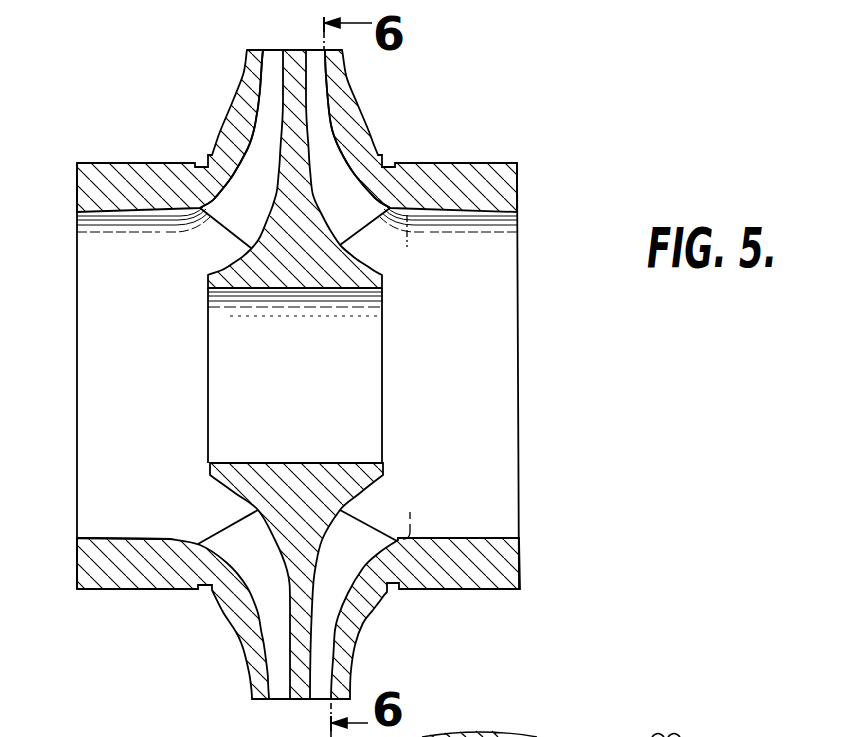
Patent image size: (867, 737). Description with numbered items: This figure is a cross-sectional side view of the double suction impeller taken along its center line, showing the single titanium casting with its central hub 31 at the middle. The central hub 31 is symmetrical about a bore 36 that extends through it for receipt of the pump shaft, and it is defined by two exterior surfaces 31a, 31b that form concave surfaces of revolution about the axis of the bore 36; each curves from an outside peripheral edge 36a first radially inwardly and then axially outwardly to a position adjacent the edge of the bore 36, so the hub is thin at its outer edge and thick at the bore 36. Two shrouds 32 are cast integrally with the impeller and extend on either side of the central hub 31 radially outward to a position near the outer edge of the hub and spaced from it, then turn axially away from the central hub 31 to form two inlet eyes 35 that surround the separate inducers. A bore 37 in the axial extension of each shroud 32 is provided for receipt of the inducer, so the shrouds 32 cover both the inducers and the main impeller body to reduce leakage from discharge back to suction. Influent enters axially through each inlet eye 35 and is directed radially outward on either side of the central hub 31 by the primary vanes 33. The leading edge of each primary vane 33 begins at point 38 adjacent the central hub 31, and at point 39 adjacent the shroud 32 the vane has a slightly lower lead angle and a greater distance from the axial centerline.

The central hub 31 is at (360, 277).
The exterior surface 31a is at (311, 178).
The exterior surface 31b is at (282, 163).
The shroud 32 is at (143, 577).
The primary vane 33 is at (282, 692).
The inlet eye 35 is at (85, 457).
The bore 36 is at (237, 462).
The outside peripheral edge 36a is at (249, 50).
The bore 37 is at (92, 538).
The point 38 is at (341, 510).
The point 39 is at (398, 537).